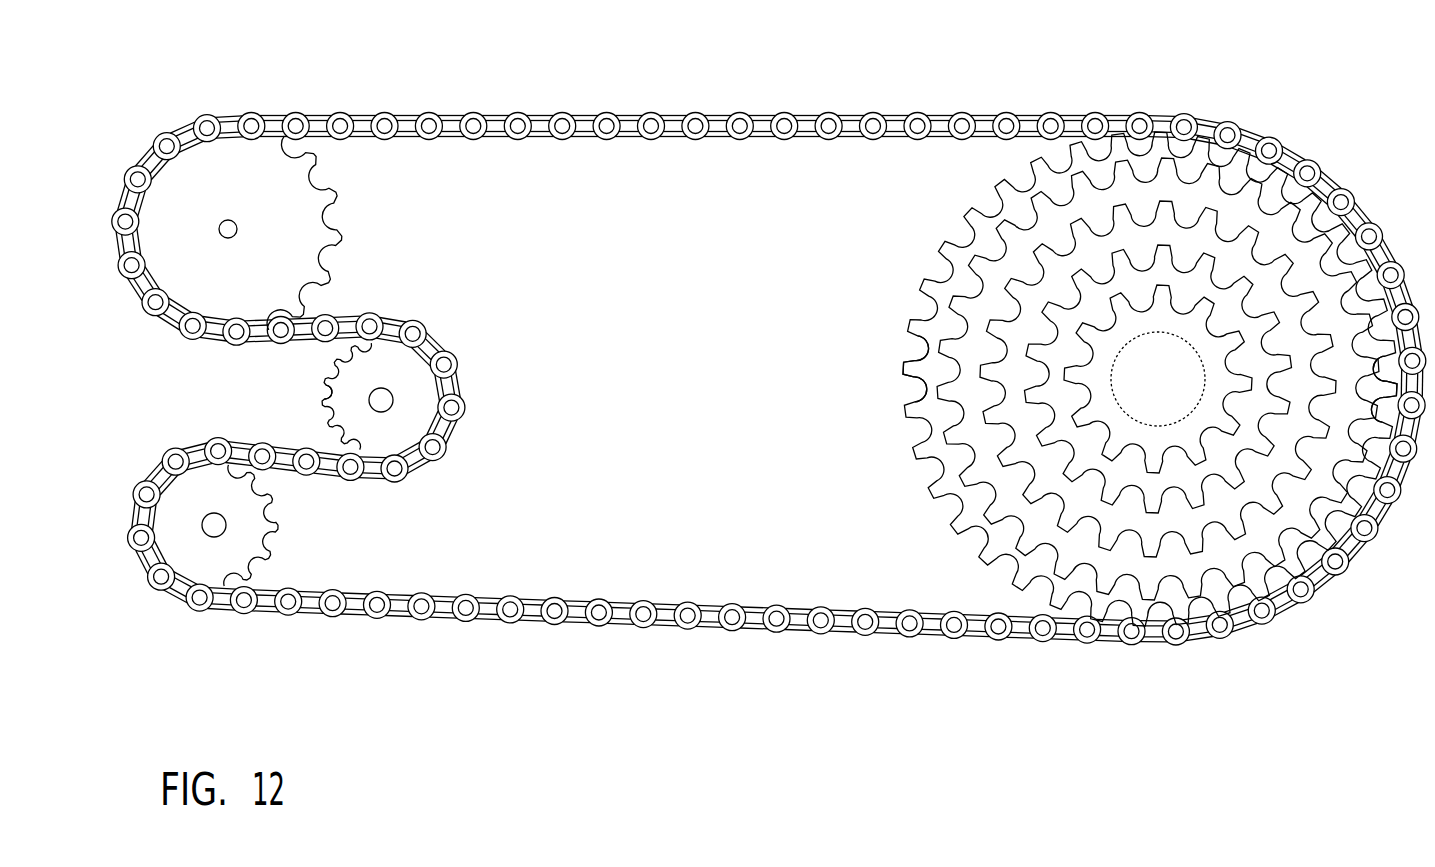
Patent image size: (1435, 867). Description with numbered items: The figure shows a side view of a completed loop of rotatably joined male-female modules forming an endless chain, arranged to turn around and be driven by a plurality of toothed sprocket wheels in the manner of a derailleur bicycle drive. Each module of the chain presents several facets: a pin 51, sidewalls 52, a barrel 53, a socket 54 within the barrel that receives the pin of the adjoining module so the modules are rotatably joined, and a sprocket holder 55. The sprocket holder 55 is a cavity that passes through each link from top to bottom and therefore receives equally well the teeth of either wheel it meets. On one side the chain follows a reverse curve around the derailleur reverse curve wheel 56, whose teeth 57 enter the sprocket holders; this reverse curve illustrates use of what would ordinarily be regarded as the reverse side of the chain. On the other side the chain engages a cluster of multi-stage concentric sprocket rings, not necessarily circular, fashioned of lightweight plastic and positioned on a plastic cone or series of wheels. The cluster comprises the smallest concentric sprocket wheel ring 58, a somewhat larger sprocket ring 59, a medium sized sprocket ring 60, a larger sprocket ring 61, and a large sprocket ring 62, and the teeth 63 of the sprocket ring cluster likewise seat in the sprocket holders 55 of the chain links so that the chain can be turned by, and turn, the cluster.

The pin 51 is at (614, 90).
The sidewalls 52 is at (725, 89).
The barrel 53 is at (838, 90).
The socket 54 is at (962, 91).
The sprocket holder 55 is at (1074, 92).
The derailleur reverse curve wheel 56 is at (250, 417).
The teeth 57 is at (239, 371).
The smallest concentric sprocket wheel ring 58 is at (1005, 346).
The somewhat larger sprocket ring 59 is at (1025, 379).
The medium sized sprocket ring 60 is at (1047, 379).
The larger sprocket ring 61 is at (1068, 379).
The large sprocket ring 62 is at (1077, 277).
The teeth of sprocket ring cluster 63 is at (1077, 481).